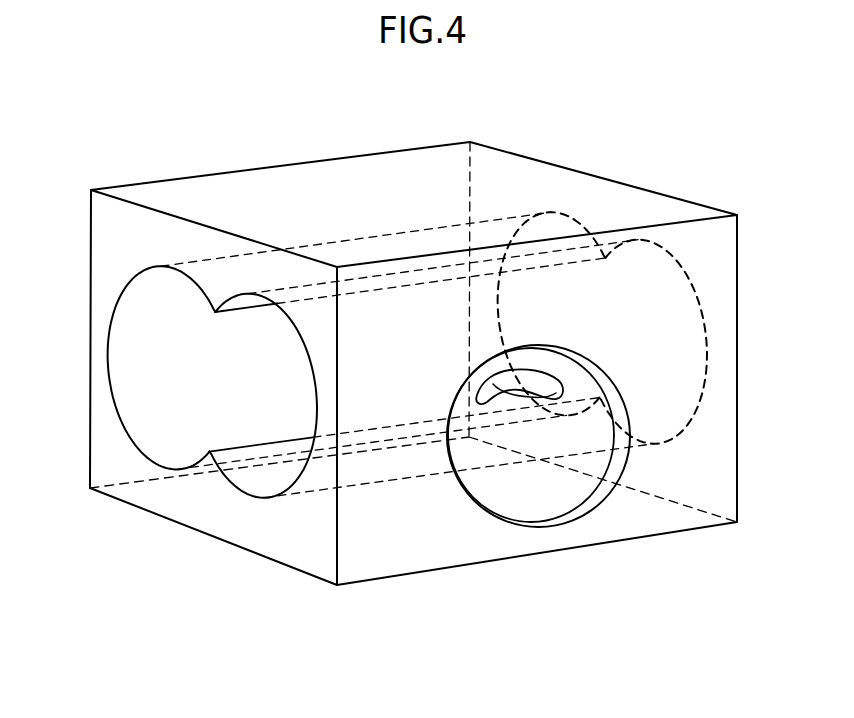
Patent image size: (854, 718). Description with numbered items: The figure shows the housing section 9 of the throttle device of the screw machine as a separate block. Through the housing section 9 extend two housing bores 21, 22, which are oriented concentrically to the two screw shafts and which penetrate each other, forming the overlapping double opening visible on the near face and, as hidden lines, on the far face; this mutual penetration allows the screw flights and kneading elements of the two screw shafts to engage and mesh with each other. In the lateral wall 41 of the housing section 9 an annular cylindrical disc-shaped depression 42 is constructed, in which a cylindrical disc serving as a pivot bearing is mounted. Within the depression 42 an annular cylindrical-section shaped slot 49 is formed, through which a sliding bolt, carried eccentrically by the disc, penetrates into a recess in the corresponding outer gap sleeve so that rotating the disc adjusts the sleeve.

The housing section 9 is at (322, 172).
The housing bore 21 is at (131, 428).
The housing bore 22 is at (287, 478).
The lateral wall 41 is at (672, 515).
The depression 42 is at (600, 495).
The slot 49 is at (493, 385).